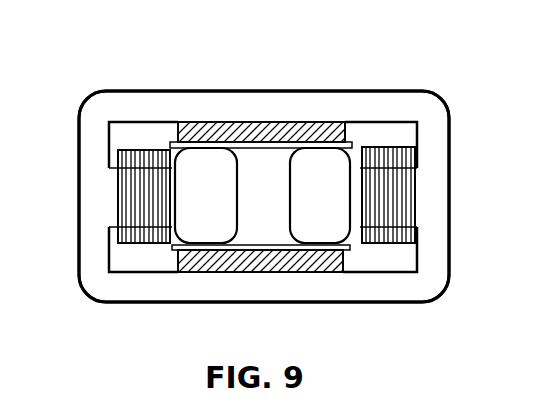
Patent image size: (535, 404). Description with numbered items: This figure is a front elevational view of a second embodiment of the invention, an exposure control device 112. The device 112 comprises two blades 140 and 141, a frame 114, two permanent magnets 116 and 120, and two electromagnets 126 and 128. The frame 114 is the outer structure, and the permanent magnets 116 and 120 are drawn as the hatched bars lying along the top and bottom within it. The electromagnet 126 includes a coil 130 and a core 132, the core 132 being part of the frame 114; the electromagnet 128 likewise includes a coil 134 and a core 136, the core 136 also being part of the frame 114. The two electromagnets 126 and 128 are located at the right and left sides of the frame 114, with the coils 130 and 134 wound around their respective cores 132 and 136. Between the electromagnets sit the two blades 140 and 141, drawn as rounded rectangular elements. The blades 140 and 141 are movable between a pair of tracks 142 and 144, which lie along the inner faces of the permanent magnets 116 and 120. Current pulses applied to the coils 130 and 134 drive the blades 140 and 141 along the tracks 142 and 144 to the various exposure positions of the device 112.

The exposure control device 112 is at (433, 68).
The frame 114 is at (450, 93).
The permanent magnet 116 is at (284, 135).
The permanent magnet 120 is at (305, 263).
The electromagnet 126 is at (381, 141).
The electromagnet 128 is at (119, 133).
The coil 130 is at (414, 190).
The core 132 is at (397, 214).
The coil 134 is at (120, 195).
The core 136 is at (130, 181).
The blade 140 is at (222, 193).
The blade 141 is at (335, 193).
The track 142 is at (272, 149).
The track 144 is at (255, 243).